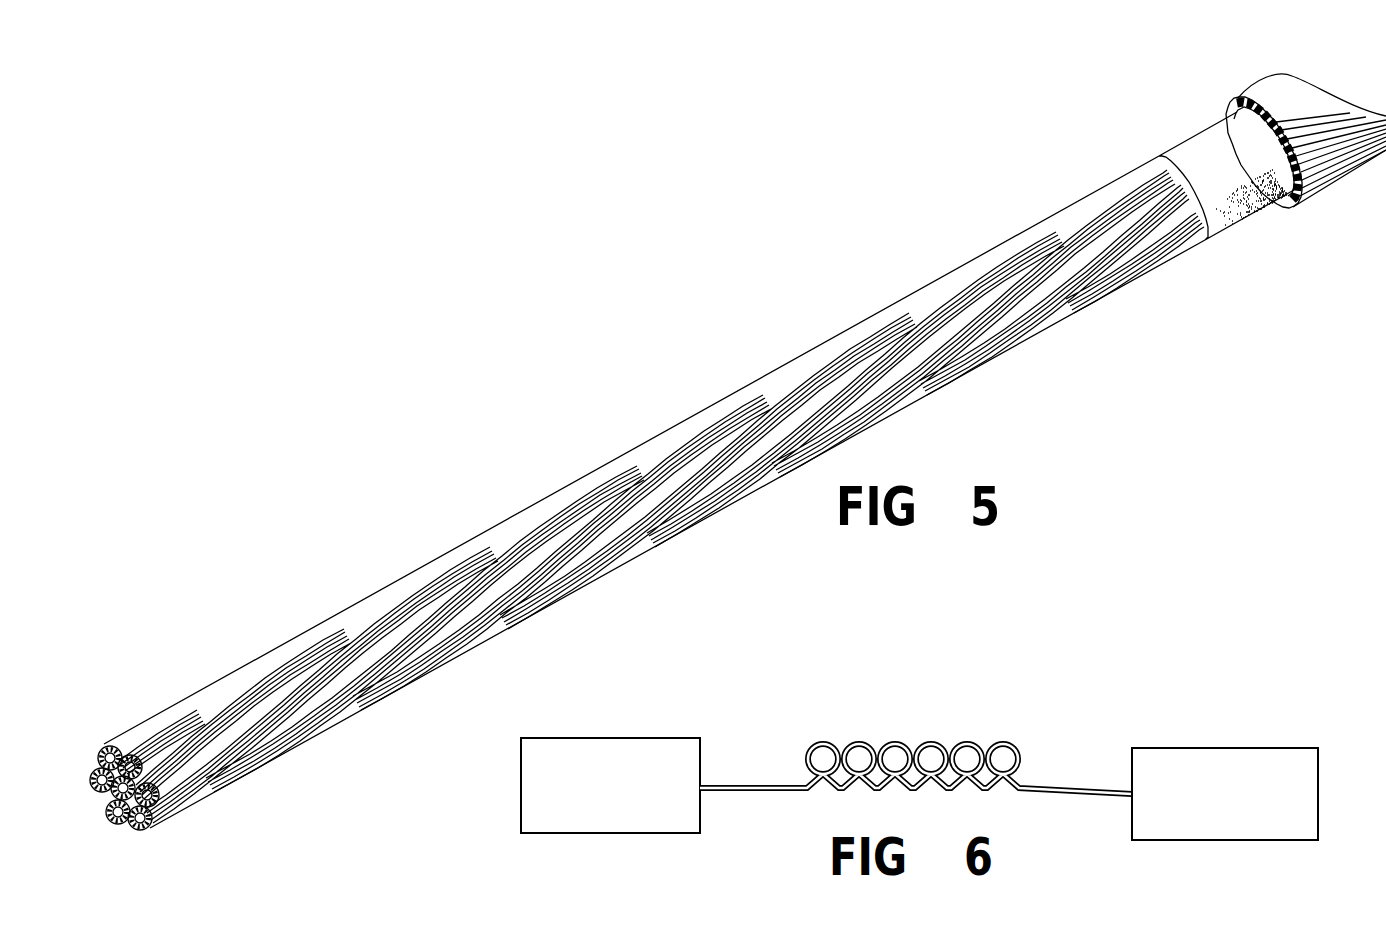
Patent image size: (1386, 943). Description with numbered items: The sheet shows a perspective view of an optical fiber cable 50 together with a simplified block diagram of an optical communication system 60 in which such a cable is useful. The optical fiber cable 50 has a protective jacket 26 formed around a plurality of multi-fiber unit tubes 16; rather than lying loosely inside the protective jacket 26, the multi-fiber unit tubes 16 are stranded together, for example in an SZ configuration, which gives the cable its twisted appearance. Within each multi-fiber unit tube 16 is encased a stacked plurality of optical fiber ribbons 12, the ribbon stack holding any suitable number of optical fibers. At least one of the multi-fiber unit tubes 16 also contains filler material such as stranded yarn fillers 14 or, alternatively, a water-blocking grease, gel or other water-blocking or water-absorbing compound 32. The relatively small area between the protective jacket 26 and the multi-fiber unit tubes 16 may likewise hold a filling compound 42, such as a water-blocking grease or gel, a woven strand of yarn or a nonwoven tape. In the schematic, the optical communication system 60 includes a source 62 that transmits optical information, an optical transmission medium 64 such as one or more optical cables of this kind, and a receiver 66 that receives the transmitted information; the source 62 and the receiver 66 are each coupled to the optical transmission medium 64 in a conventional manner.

In FIG. 5, the optical fiber cable 50 is at (560, 348).
In FIG. 5, the multi-fiber unit tube 16 is at (473, 547).
In FIG. 5, the water-blocking compound 32 is at (96, 770).
In FIG. 5, the optical fiber ribbons 12 is at (108, 808).
In FIG. 5, the stranded yarn fillers 14 is at (128, 823).
In FIG. 5, the filling compound 42 is at (1205, 140).
In FIG. 5, the protective jacket 26 is at (1272, 95).
In FIG. 6, the optical communication system 60 is at (757, 709).
In FIG. 6, the source 62 is at (610, 738).
In FIG. 6, the optical transmission medium 64 is at (897, 747).
In FIG. 6, the receiver 66 is at (1228, 748).